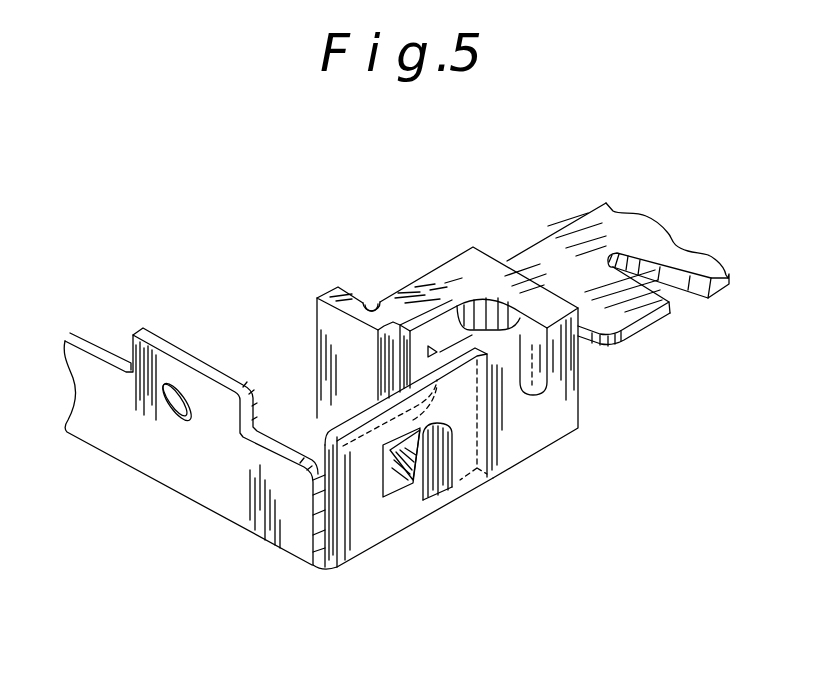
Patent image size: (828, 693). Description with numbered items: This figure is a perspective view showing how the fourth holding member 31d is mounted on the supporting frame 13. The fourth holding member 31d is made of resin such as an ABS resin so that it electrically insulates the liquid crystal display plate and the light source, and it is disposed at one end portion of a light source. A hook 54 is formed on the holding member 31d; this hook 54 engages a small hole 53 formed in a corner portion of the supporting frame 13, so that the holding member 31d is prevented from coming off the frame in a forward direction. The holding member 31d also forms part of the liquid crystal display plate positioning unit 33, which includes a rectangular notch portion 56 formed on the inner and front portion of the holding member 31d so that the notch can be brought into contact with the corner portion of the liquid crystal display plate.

The liquid crystal display plate positioning unit 33 is at (381, 200).
The fourth holding member 31d is at (462, 277).
The rectangular notch portion 56 is at (372, 302).
The supporting frame 13 is at (222, 490).
The small hole 53 is at (443, 495).
The hook 54 is at (402, 478).